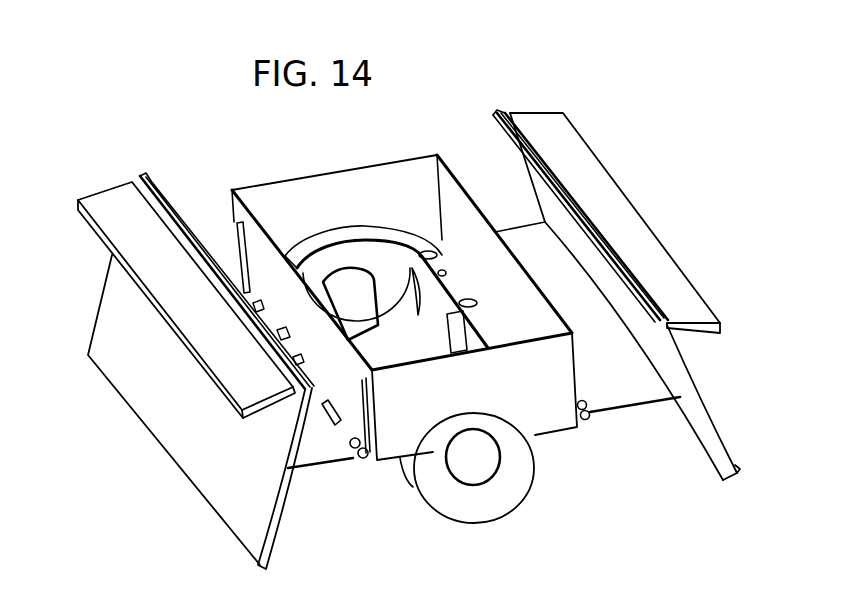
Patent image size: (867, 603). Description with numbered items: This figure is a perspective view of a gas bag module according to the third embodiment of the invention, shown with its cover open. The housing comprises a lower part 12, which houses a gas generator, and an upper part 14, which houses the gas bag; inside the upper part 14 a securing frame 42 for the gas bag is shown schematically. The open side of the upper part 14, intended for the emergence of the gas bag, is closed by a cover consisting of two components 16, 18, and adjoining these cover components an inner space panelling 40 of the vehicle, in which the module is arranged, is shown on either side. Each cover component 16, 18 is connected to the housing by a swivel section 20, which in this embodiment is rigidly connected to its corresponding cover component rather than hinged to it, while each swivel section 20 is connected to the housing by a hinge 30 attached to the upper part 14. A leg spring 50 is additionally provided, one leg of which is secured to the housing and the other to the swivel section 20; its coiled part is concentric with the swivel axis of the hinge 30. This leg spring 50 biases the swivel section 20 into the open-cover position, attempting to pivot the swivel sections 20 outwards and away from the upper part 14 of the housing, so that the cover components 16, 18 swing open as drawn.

The lower part 12 is at (505, 487).
The upper part 14 is at (366, 188).
The cover component 16 is at (202, 458).
The cover component 18 is at (722, 443).
The swivel section 20 is at (308, 452).
The hinge 30 is at (367, 458).
The inner space panelling 40 is at (112, 198).
The securing frame 42 is at (320, 238).
The leg spring 50 is at (237, 230).